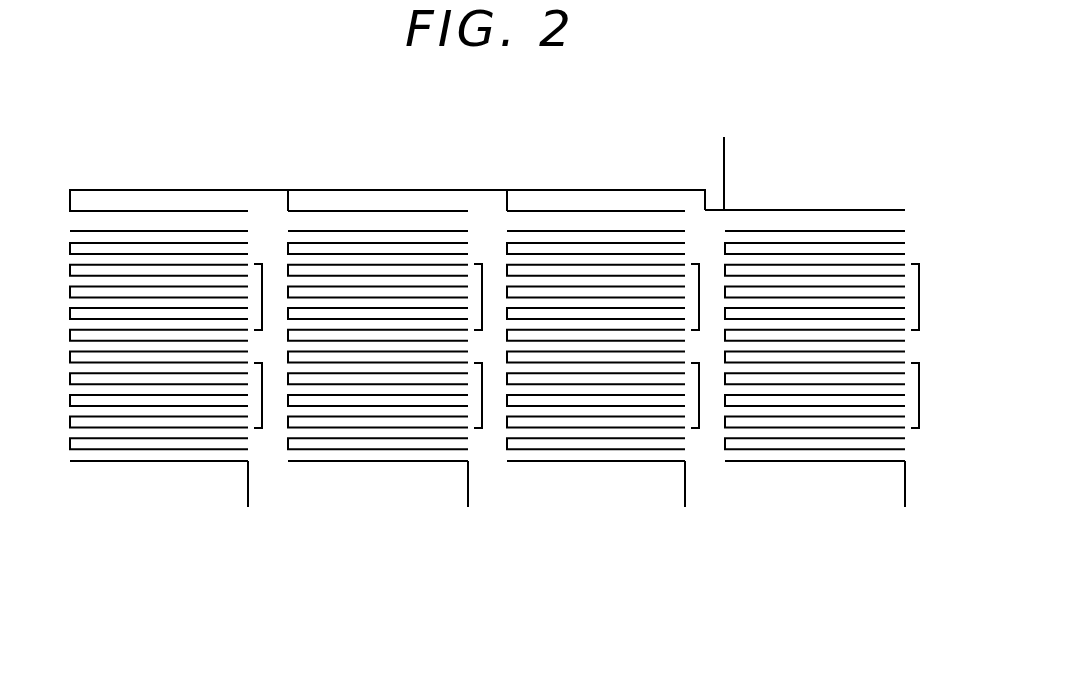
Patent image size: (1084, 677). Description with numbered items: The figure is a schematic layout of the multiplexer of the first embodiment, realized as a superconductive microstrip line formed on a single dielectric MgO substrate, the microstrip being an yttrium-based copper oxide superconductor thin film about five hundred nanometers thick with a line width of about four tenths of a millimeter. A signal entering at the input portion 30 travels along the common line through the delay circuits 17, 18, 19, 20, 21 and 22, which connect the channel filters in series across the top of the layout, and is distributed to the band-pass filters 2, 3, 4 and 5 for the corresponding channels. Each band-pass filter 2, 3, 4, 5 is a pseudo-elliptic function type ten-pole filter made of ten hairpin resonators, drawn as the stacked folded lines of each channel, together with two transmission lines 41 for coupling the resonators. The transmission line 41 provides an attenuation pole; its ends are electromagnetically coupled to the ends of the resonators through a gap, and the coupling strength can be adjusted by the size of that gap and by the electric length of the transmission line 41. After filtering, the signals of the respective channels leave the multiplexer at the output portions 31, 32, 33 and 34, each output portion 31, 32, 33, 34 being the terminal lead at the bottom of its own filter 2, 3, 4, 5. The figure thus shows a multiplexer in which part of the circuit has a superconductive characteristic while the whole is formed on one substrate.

The band-pass filter 2 is at (806, 487).
The band-pass filter 3 is at (587, 491).
The band-pass filter 4 is at (371, 491).
The band-pass filter 5 is at (152, 491).
The delay circuit 17 is at (838, 208).
The delay circuit 18 is at (598, 188).
The delay circuit 19 is at (513, 213).
The delay circuit 20 is at (378, 188).
The delay circuit 21 is at (293, 213).
The delay circuit 22 is at (161, 188).
The input portion 30 is at (725, 157).
The output portion 31 is at (905, 491).
The output portion 32 is at (685, 491).
The output portion 33 is at (468, 491).
The output portion 34 is at (248, 491).
The transmission line 41 is at (257, 261).